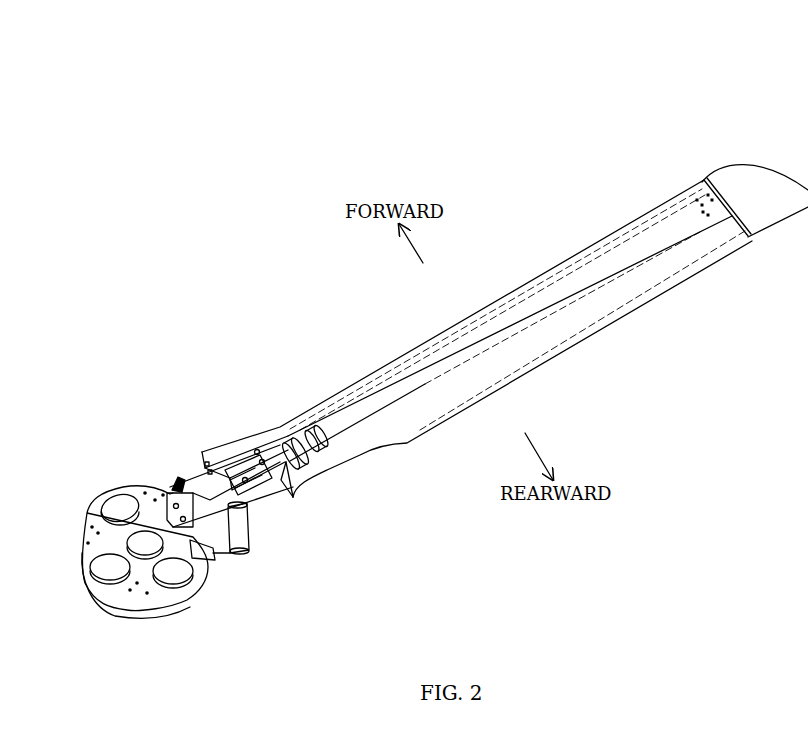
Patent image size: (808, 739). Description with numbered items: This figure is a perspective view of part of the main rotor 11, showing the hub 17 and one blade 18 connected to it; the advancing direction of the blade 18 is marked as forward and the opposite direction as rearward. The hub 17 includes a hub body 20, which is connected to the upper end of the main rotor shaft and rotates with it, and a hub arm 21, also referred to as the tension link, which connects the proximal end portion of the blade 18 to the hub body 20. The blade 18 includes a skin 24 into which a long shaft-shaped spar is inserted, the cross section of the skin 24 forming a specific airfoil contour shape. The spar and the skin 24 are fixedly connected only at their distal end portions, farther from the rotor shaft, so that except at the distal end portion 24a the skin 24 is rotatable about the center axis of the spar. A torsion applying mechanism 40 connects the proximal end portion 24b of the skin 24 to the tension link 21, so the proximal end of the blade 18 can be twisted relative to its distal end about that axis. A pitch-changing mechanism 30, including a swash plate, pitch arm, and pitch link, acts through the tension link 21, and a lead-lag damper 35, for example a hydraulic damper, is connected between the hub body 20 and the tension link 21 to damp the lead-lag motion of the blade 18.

The main rotor 11 is at (578, 116).
The hub 17 is at (90, 447).
The blade 18 is at (553, 195).
The hub body 20 is at (95, 500).
The hub arm 21 is at (260, 505).
The skin 24 is at (537, 277).
The distal end portion 24a is at (728, 178).
The proximal end portion 24b is at (288, 498).
The pitch-changing mechanism 30 is at (168, 462).
The lead-lag damper 35 is at (243, 545).
The torsion applying mechanism 40 is at (212, 430).